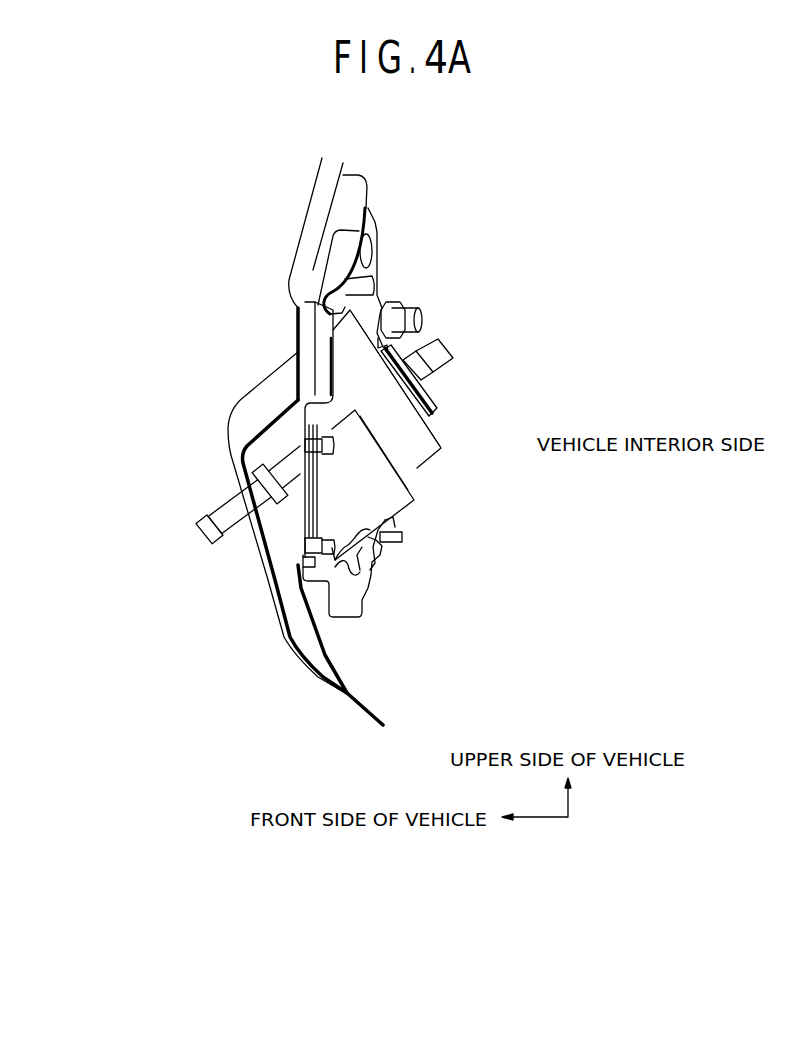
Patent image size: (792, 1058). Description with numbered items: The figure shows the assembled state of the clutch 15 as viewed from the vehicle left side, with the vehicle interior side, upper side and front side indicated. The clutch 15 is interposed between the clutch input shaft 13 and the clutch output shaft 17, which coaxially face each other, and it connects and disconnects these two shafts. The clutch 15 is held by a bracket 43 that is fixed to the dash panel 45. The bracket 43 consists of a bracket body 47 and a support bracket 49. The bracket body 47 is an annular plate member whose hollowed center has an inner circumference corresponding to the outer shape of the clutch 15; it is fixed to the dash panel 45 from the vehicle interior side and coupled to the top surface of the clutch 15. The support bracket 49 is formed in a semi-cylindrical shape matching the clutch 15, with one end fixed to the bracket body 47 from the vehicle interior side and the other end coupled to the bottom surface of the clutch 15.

The clutch input shaft 13 is at (443, 360).
The clutch 15 is at (408, 437).
The clutch output shaft 17 is at (227, 508).
The bracket 43 is at (478, 627).
The dash panel 45 is at (316, 210).
The bracket body 47 is at (368, 308).
The support bracket 49 is at (416, 503).